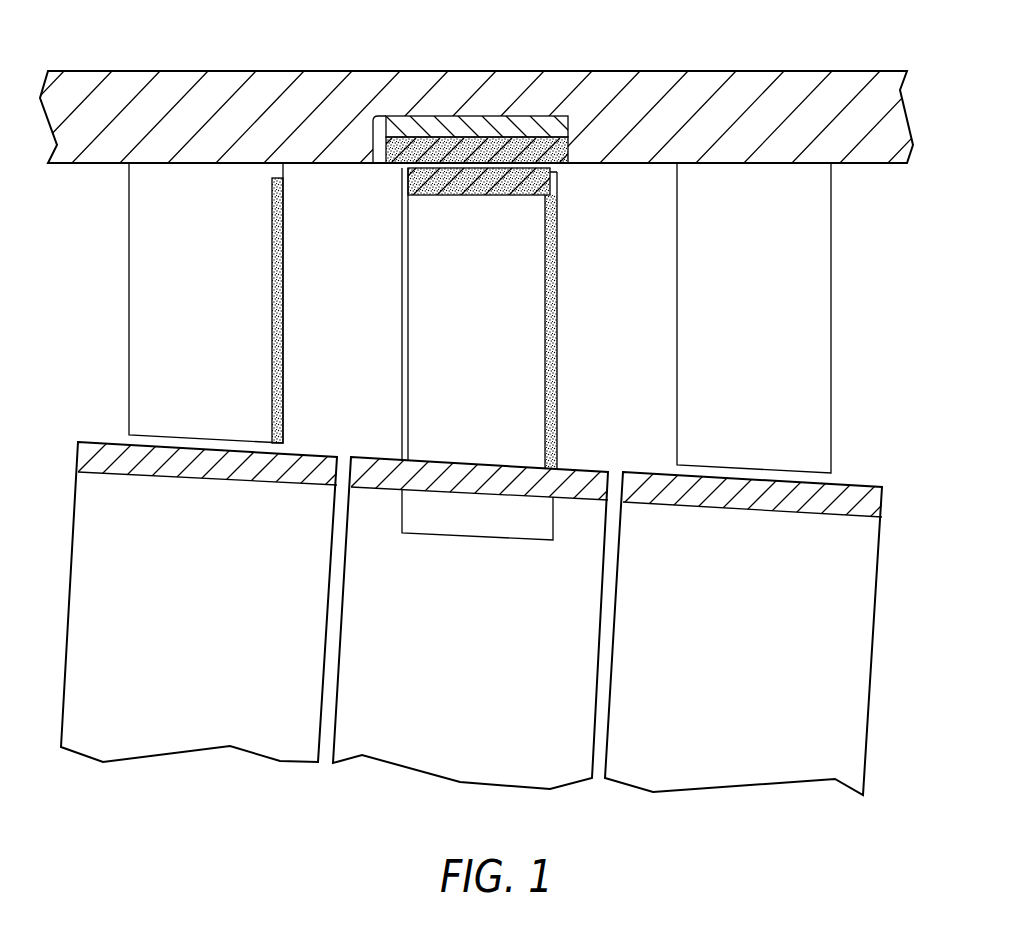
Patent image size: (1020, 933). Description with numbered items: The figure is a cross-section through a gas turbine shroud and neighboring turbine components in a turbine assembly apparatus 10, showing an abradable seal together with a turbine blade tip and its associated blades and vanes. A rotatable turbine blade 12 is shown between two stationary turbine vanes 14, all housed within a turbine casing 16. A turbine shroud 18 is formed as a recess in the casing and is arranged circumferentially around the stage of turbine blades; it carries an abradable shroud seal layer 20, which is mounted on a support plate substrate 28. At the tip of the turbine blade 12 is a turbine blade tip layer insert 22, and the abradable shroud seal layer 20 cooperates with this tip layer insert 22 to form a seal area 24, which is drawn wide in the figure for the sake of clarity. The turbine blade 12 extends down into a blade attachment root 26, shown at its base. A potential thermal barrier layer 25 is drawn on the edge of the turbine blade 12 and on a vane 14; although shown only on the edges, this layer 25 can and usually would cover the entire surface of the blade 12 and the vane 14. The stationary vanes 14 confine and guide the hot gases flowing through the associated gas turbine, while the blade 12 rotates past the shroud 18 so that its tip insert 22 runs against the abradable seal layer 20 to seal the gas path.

The turbine assembly apparatus 10 is at (118, 34).
The turbine blade 12 is at (546, 334).
The turbine vane 14 is at (145, 330).
The turbine casing 16 is at (181, 71).
The turbine shroud 18 is at (373, 143).
The abradable shroud seal layer 20 is at (568, 152).
The turbine blade tip layer insert 22 is at (442, 197).
The seal area 24 is at (402, 167).
The thermal barrier layer 25 is at (284, 305).
The blade attachment root 26 is at (465, 520).
The support plate substrate 28 is at (502, 128).